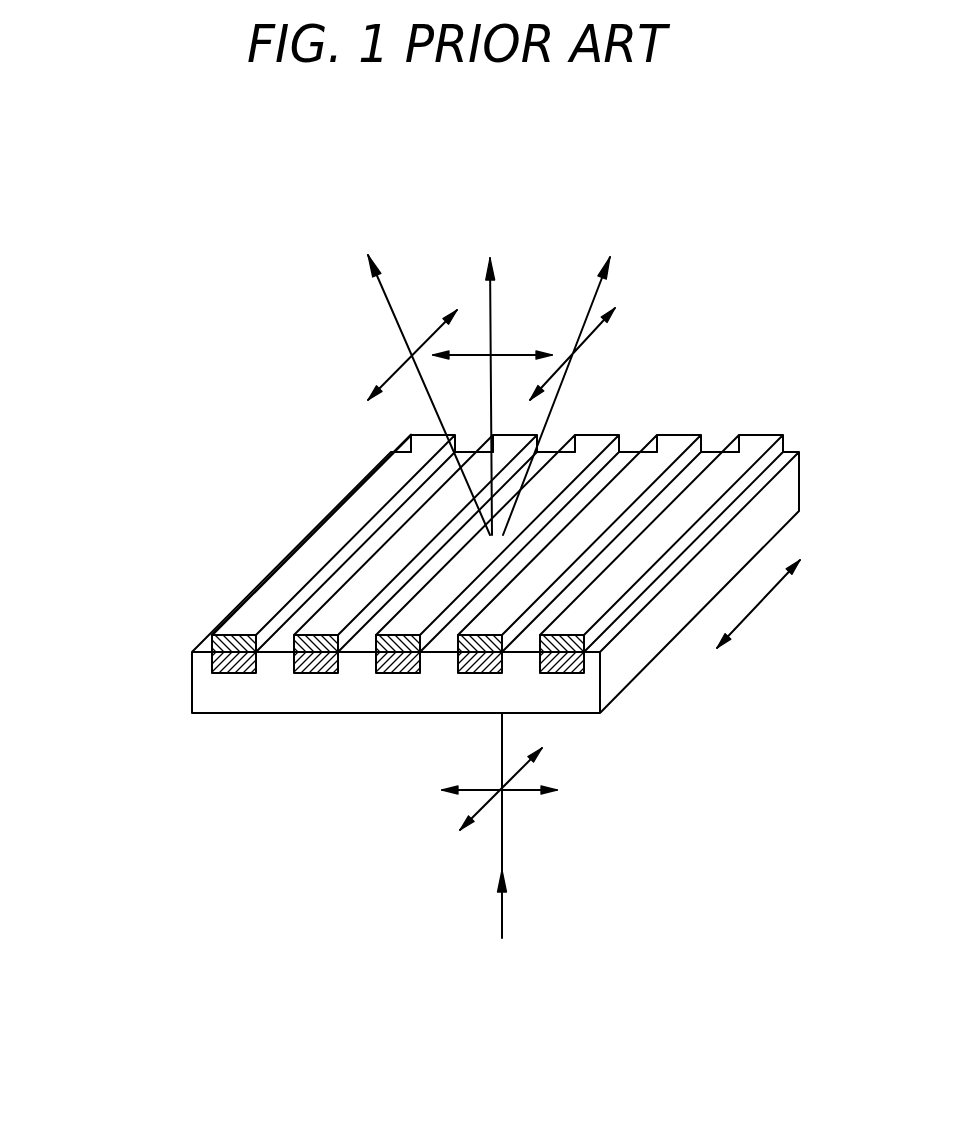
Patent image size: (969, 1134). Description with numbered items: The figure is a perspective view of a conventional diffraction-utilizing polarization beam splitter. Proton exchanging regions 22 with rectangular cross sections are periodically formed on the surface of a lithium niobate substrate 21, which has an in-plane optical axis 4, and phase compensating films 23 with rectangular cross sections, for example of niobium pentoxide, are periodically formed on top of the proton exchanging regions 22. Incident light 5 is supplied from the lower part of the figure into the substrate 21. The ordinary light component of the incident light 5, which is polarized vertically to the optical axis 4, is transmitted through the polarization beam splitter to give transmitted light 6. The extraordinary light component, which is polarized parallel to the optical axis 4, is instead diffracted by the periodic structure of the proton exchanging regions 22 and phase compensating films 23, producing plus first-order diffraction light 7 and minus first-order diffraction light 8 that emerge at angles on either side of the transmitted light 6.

The optical axis 4 is at (752, 613).
The incident light 5 is at (500, 927).
The transmitted light 6 is at (490, 255).
The +1st-order diffraction light 7 is at (590, 272).
The −1st-order diffraction light 8 is at (366, 250).
The lithium niobate substrate 21 is at (300, 700).
The proton exchanging region 22 is at (222, 674).
The phase compensating film 23 is at (220, 635).